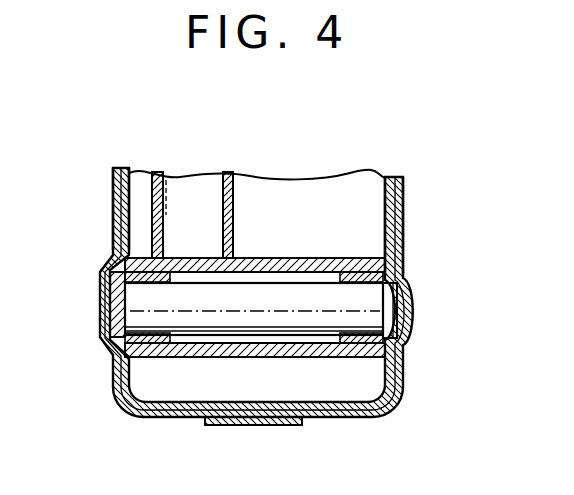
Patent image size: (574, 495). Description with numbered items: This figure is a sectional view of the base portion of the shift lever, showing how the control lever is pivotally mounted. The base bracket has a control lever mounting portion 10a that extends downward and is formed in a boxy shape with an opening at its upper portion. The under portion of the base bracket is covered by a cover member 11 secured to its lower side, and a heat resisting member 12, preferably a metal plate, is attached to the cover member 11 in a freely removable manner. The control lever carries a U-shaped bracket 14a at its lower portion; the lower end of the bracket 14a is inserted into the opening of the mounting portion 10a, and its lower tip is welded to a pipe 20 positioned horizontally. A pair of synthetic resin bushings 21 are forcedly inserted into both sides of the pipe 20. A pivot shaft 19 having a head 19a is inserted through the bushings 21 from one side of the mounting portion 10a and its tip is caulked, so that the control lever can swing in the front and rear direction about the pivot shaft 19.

The control lever mounting portion 10a is at (129, 185).
The cover member 11 is at (113, 203).
The heat resisting member 12 is at (233, 427).
The bracket 14a is at (233, 187).
The pivot shaft 19 is at (257, 290).
The head 19a is at (110, 292).
The pipe 20 is at (310, 258).
The bushing 21 is at (356, 272).